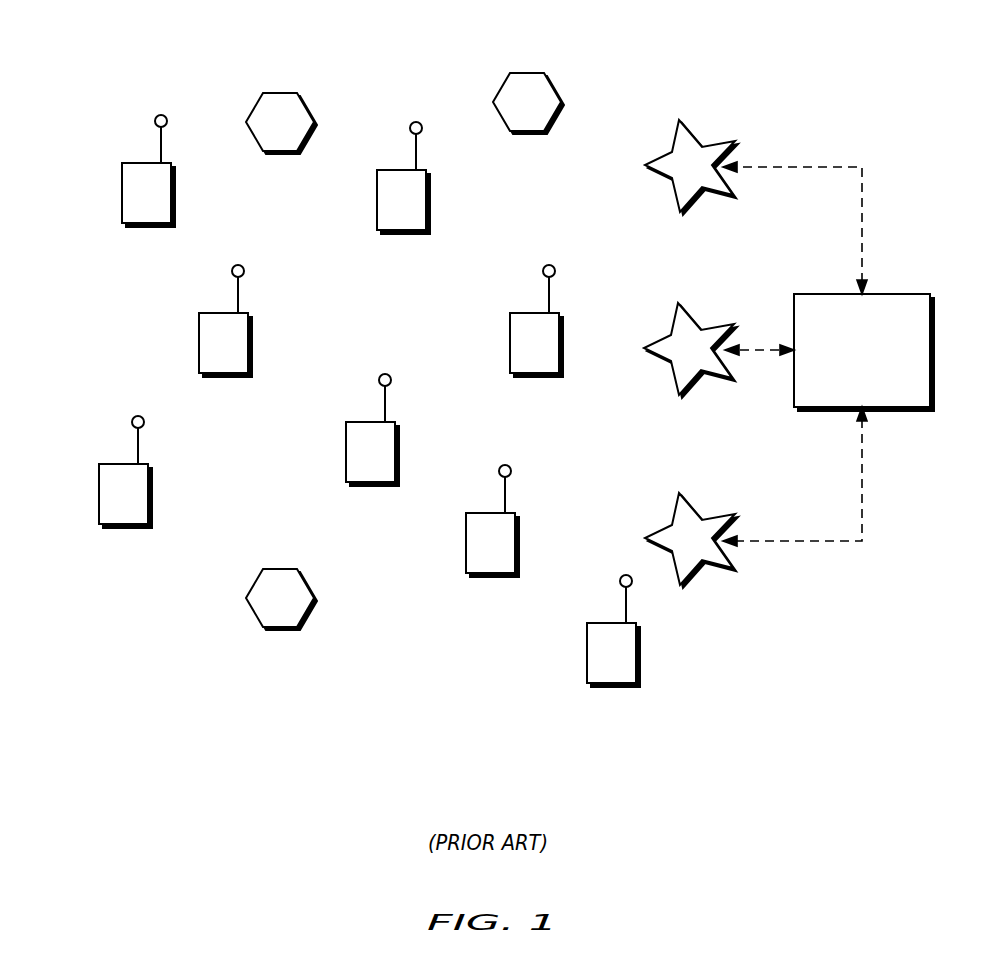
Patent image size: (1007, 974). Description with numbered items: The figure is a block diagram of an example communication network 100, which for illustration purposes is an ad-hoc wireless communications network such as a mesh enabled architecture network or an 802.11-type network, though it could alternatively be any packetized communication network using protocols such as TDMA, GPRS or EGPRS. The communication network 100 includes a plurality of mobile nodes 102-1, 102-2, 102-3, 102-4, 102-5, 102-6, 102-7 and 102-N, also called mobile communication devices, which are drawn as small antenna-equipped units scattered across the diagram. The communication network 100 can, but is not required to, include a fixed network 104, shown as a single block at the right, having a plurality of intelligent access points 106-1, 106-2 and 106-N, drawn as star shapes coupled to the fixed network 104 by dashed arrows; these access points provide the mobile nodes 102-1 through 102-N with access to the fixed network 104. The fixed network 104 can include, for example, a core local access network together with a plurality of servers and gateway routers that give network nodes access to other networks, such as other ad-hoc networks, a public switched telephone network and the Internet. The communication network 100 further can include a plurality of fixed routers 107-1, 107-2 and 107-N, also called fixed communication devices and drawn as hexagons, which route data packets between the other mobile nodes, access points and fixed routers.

The communication network 100 is at (840, 44).
The mobile node 102-1 is at (132, 163).
The mobile node 102-2 is at (387, 170).
The mobile node 102-3 is at (209, 313).
The mobile node 102-4 is at (109, 464).
The mobile node 102-5 is at (356, 422).
The mobile node 102-6 is at (520, 313).
The mobile node 102-7 is at (476, 513).
The mobile node 102-N is at (597, 623).
The fixed network 104 is at (805, 294).
The intelligent access point 106-1 is at (662, 155).
The intelligent access point 106-2 is at (661, 338).
The intelligent access point 106-N is at (662, 528).
The fixed router 107-1 is at (270, 93).
The fixed router 107-2 is at (517, 73).
The fixed router 107-N is at (268, 569).